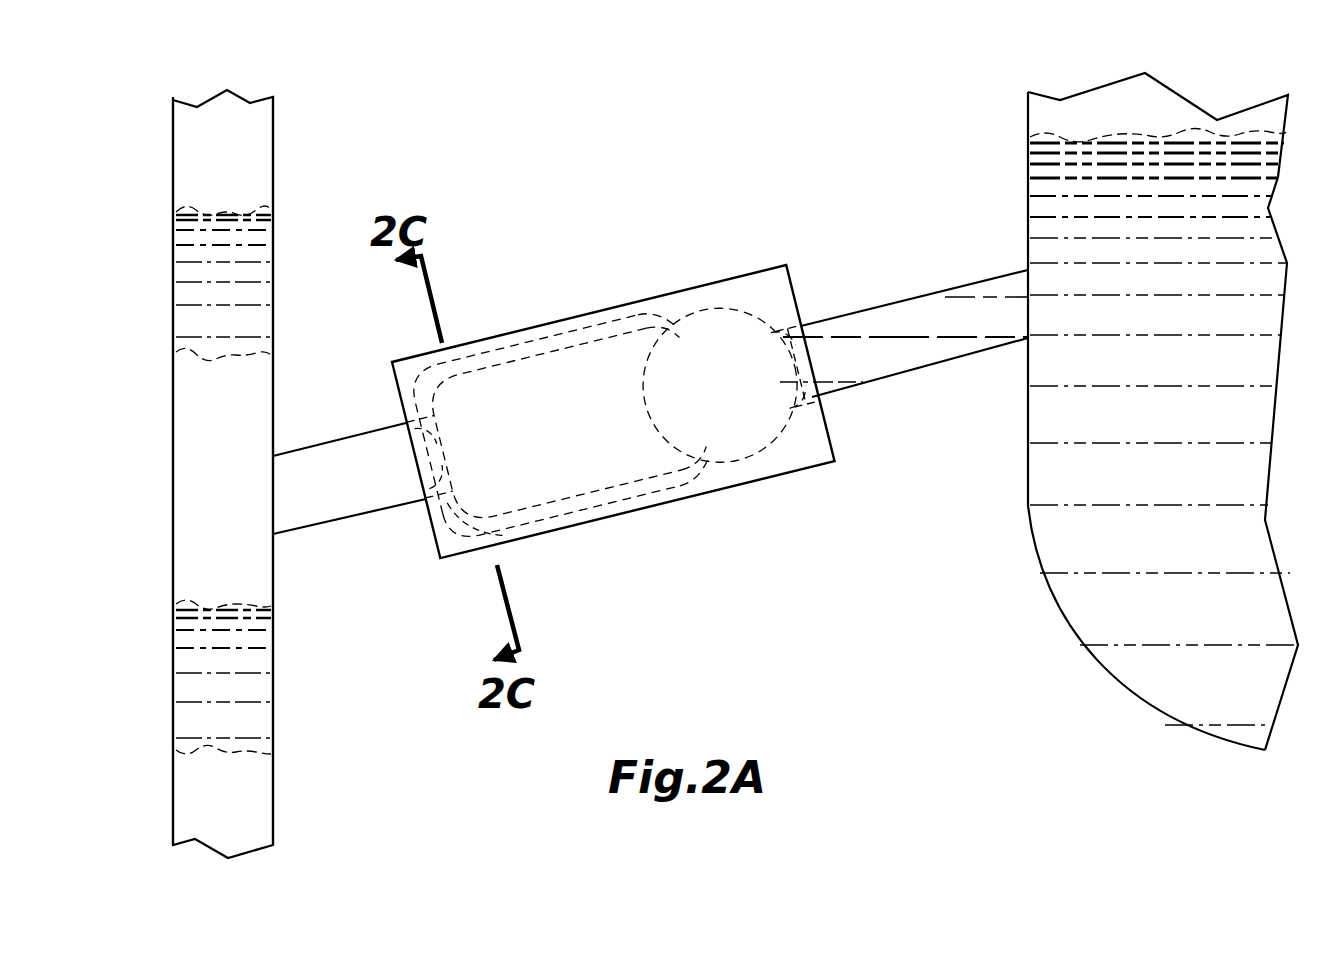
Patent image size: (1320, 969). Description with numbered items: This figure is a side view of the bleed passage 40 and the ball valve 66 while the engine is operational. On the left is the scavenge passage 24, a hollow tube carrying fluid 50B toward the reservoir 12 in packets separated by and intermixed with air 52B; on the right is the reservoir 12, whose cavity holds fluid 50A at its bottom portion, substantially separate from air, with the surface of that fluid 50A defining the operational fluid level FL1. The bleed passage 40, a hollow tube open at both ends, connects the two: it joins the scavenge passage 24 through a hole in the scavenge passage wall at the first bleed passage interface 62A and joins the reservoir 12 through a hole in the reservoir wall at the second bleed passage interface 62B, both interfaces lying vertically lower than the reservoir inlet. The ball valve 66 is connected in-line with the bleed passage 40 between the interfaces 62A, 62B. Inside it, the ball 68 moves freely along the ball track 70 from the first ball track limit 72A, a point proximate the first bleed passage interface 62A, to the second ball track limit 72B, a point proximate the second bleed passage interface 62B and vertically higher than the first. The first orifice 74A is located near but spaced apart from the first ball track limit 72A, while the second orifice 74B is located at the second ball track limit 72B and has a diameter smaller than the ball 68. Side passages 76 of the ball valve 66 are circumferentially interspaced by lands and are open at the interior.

The reservoir 12 is at (1121, 392).
The scavenge passage 24 is at (261, 474).
The bleed passage 40 is at (650, 419).
The fluid 50A is at (1182, 673).
The fluid 50B is at (230, 692).
The air 52B is at (237, 571).
The first bleed passage interface 62A is at (275, 477).
The second bleed passage interface 62B is at (1027, 318).
The ball valve 66 is at (613, 411).
The ball 68 is at (720, 385).
The ball track 70 is at (568, 422).
The first ball track limit 72A is at (544, 429).
The second ball track limit 72B is at (730, 383).
The first orifice 74A is at (430, 457).
The second orifice 74B is at (798, 366).
The side passages 76 is at (477, 519).
The operational fluid level FL1 is at (1213, 118).